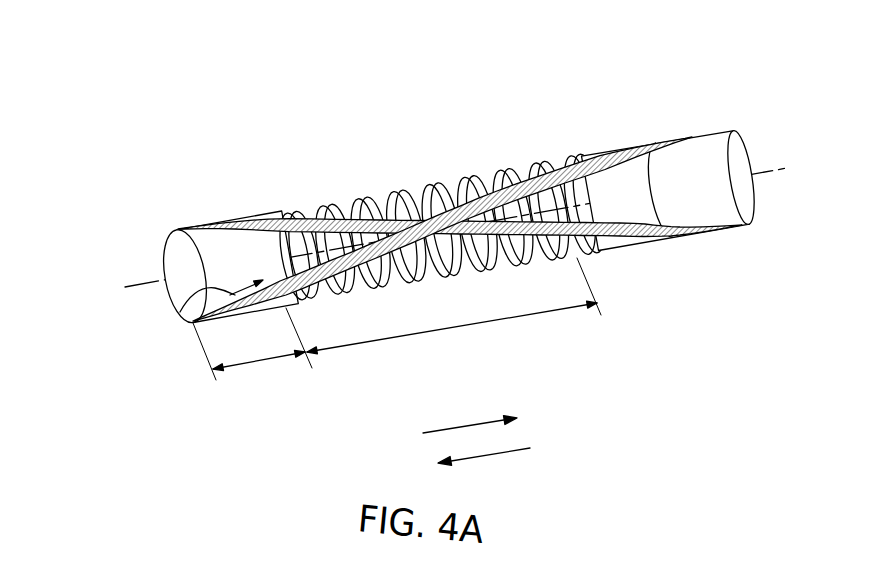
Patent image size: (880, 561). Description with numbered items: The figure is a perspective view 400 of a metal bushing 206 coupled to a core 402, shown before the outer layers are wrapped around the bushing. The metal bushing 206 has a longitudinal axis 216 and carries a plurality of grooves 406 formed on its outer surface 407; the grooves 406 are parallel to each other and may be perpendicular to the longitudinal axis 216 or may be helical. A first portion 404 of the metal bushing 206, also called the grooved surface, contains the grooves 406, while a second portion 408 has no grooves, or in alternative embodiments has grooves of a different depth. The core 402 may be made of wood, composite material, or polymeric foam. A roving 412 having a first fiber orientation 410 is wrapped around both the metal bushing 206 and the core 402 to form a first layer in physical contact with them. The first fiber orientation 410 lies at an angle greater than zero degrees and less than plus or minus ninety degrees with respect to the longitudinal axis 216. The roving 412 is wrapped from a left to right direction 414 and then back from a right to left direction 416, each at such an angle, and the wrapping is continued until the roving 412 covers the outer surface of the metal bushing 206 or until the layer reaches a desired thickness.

The perspective view 400 is at (212, 53).
The longitudinal axis 216 is at (145, 277).
The metal bushing 206 is at (332, 205).
The core 402 is at (716, 140).
The first portion 404 is at (442, 331).
The grooves 406 is at (452, 190).
The outer surface 407 is at (210, 237).
The second portion 408 is at (257, 363).
The first fiber orientation 410 is at (185, 312).
The roving 412 is at (592, 163).
The left to right direction 414 is at (457, 427).
The right to left direction 416 is at (490, 457).